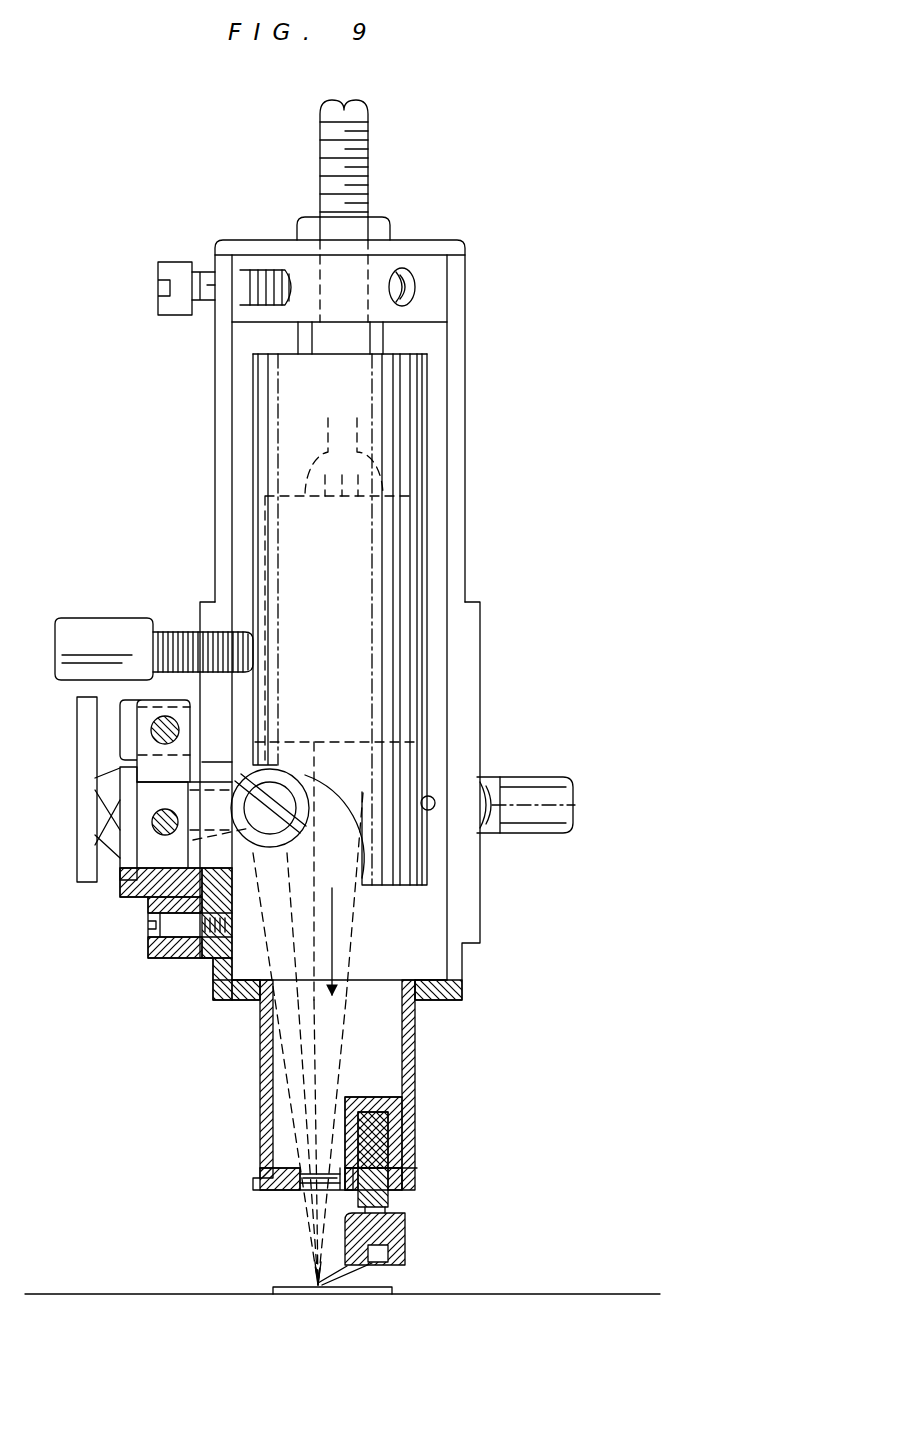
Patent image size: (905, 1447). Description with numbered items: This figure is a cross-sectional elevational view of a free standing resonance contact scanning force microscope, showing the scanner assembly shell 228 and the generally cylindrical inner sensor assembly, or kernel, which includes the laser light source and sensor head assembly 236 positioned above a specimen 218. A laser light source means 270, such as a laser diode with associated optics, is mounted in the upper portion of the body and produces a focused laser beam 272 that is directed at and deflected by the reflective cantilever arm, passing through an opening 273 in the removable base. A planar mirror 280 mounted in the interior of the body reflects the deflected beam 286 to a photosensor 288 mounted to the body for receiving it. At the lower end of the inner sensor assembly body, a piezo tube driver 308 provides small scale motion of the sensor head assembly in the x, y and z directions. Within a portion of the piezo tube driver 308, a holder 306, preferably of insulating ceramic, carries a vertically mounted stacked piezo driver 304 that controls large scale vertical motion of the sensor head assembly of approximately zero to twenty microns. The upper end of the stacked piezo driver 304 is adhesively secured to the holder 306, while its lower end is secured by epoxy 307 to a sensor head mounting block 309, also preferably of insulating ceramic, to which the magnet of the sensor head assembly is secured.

The scanner assembly shell 228 is at (470, 288).
The laser light source means 270 is at (360, 742).
The planar mirror 280 is at (308, 782).
The focused laser beam 272 is at (357, 918).
The deflected beam 286 is at (287, 1073).
The photosensor 288 is at (113, 855).
The piezo tube driver 308 is at (261, 1113).
The opening 273 is at (317, 1192).
The stacked piezo driver 304 is at (385, 1135).
The holder 306 is at (417, 1168).
The epoxy 307 is at (409, 1203).
The sensor head mounting block 309 is at (405, 1260).
The laser light source and sensor head assembly 236 is at (266, 1246).
The specimen 218 is at (315, 1282).